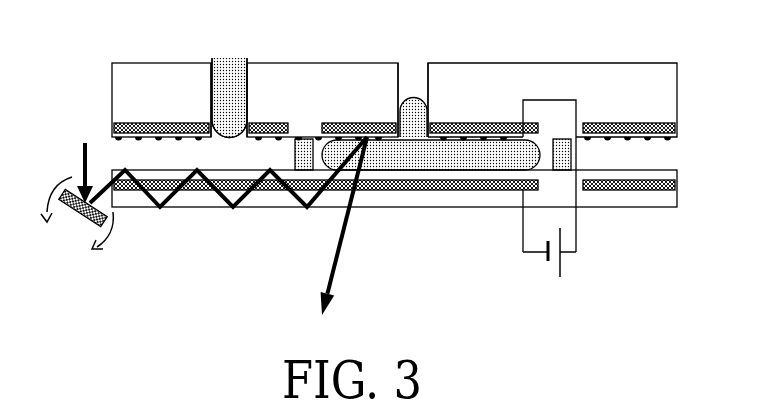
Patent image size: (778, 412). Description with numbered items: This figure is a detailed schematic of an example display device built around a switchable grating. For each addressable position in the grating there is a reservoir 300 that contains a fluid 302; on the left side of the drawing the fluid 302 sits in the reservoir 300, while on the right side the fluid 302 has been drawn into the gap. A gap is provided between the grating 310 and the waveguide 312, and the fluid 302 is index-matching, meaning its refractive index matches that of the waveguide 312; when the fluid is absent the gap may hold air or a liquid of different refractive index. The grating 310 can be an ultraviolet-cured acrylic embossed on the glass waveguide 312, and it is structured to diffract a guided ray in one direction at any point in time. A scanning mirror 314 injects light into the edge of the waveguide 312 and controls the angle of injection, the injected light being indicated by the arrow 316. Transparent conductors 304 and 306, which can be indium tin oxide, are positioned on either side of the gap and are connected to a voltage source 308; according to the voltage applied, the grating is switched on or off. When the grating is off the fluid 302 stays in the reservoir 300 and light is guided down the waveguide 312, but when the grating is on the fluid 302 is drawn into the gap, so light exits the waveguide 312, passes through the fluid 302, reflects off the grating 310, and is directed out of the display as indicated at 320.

The reservoir 300 is at (232, 55).
The fluid 302 is at (248, 101).
The transparent conductor 304 is at (662, 120).
The transparent conductor 306 is at (634, 192).
The voltage source 308 is at (570, 268).
The grating 310 is at (677, 140).
The waveguide 312 is at (657, 203).
The scanning mirror 314 is at (80, 226).
The incident light 316 is at (115, 157).
The light directed out of the display 320 is at (335, 298).